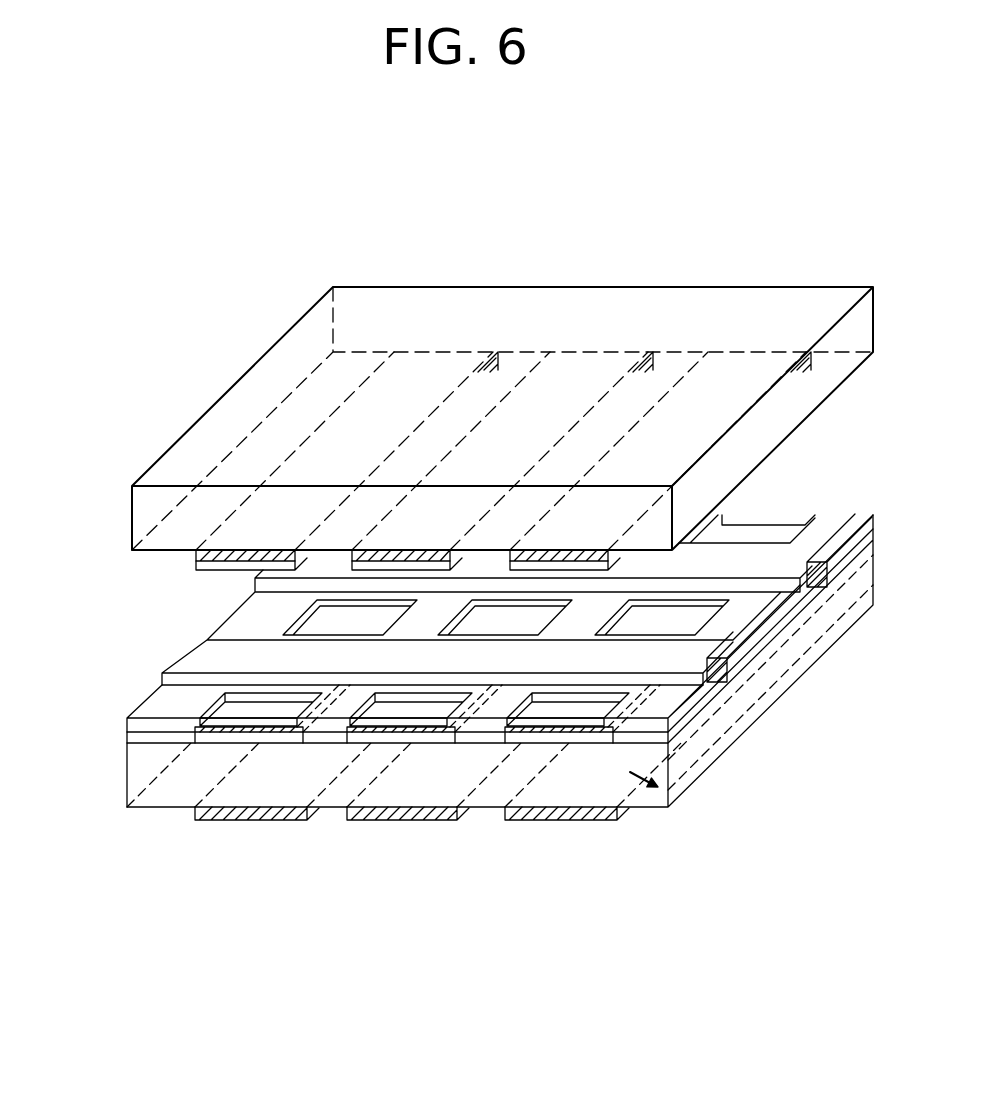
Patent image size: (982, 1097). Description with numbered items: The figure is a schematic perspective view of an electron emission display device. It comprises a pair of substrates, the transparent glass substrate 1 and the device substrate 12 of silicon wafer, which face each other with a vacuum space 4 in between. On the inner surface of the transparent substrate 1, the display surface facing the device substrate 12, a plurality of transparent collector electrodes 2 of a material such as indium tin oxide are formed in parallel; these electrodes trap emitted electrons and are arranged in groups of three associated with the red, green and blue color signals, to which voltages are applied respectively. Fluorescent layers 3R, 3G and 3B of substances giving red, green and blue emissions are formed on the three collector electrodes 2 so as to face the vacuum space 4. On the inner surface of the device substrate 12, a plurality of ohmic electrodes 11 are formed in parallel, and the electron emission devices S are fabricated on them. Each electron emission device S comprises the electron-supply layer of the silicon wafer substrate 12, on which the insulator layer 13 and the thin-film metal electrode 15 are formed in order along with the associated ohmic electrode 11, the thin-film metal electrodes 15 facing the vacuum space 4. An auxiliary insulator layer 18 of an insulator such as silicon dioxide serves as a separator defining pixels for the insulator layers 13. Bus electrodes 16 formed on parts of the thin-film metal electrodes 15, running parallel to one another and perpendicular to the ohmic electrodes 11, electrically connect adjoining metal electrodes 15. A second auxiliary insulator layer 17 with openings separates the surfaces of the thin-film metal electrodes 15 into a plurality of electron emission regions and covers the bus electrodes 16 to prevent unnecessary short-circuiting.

The transparent glass substrate 1 is at (290, 350).
The transparent collector electrodes 2 is at (196, 556).
The red fluorescent layer 3R is at (272, 563).
The green fluorescent layer 3G is at (407, 563).
The blue fluorescent layer 3B is at (562, 565).
The vacuum space 4 is at (853, 458).
The ohmic electrodes 11 is at (222, 812).
The device substrate 12 is at (133, 775).
The insulator layer 13 is at (296, 735).
The thin-film metal electrodes 15 is at (245, 715).
The bus electrodes 16 is at (722, 672).
The second auxiliary insulator layer 17 is at (147, 707).
The auxiliary insulator layer 18 is at (133, 738).
The electron emission device S is at (668, 807).